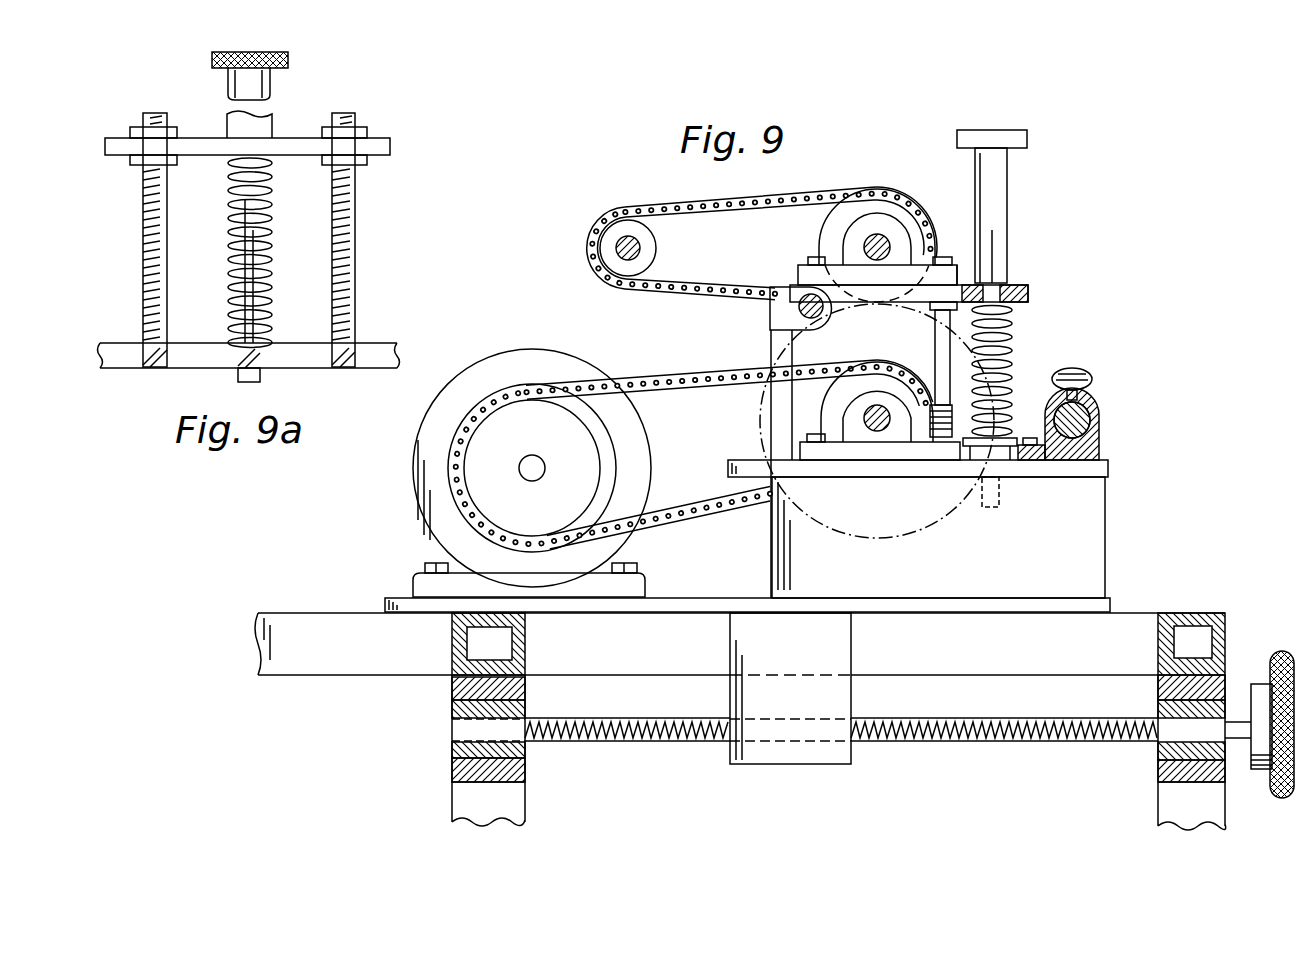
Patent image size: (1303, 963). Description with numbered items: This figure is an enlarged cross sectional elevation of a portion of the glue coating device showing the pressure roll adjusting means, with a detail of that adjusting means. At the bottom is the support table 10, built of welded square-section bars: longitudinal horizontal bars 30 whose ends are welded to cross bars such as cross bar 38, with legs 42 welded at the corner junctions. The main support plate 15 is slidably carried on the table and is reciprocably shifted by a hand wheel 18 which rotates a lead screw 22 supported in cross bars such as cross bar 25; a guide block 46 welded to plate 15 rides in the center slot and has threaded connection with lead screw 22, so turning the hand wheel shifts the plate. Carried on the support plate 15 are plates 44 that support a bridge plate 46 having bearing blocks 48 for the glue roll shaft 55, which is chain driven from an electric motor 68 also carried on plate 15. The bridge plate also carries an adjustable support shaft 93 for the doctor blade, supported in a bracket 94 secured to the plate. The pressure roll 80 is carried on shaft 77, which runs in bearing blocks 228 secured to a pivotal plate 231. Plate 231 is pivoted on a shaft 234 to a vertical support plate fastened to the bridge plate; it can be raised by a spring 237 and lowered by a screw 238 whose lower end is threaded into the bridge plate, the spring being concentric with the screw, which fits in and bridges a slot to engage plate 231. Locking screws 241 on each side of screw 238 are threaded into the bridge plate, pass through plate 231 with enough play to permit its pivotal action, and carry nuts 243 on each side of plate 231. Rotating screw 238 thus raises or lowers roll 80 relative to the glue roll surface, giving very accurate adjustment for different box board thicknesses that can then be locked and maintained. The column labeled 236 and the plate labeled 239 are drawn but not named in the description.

In FIG. 9, the support table 10 is at (1232, 556).
In FIG. 9, the main support plate 15 is at (1100, 606).
In FIG. 9, the hand wheel 18 is at (1284, 650).
In FIG. 9, the lead screw 22 is at (1080, 718).
In FIG. 9, the cross bar 25 is at (520, 695).
In FIG. 9, the longitudinal horizontal bar 30 is at (1040, 651).
In FIG. 9, the cross bar 38 is at (515, 645).
In FIG. 9, the leg 42 is at (510, 808).
In FIG. 9, the plate 44 is at (1082, 525).
In FIG. 9, the bridge plate 46 is at (800, 653).
In FIG. 9A, the bridge plate 46 is at (370, 355).
In FIG. 9, the bearing block 48 is at (870, 455).
In FIG. 9, the shaft 55 is at (885, 434).
In FIG. 9, the electric motor 68 is at (529, 357).
In FIG. 9, the shaft 77 is at (872, 258).
In FIG. 9, the pressure roll 80 is at (825, 237).
In FIG. 9, the adjustable support shaft 93 is at (1087, 428).
In FIG. 9, the bracket 94 is at (1095, 412).
In FIG. 9, the bearing block 228 is at (877, 218).
In FIG. 9, the pivotal plate 231 is at (970, 282).
In FIG. 9A, the pivotal plate 231 is at (380, 147).
In FIG. 9, the shaft 234 is at (806, 308).
In FIG. 9, the support column 236 is at (772, 353).
In FIG. 9, the spring 237 is at (1010, 362).
In FIG. 9, the screw 238 is at (995, 218).
In FIG. 9A, the screw 238 is at (242, 84).
In FIG. 9, the plate 239 is at (1030, 293).
In FIG. 9A, the locking screw 241 is at (337, 117).
In FIG. 9, the nut 243 is at (936, 308).
In FIG. 9A, the nut 243 is at (368, 131).